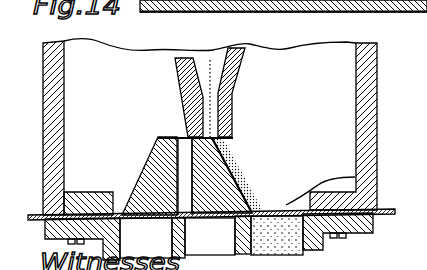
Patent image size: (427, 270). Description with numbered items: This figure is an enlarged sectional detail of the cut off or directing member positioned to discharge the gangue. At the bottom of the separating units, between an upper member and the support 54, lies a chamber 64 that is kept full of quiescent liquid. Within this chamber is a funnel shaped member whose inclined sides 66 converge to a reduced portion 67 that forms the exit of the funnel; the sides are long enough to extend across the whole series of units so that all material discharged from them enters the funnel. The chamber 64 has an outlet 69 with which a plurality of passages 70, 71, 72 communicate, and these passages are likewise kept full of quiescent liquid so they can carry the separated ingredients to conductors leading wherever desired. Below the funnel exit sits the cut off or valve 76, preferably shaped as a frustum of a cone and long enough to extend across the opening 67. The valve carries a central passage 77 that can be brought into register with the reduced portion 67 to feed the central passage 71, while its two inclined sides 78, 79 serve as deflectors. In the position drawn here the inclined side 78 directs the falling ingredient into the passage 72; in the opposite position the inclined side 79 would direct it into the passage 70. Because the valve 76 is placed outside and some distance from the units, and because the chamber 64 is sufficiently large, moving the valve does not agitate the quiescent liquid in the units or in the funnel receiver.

The support 54 is at (386, 214).
The chamber 64 is at (377, 140).
The inclined sides 66 is at (187, 58).
The reduced portion 67 is at (216, 118).
The outlet 69 is at (355, 177).
The passage 70 is at (146, 239).
The central passage 71 is at (210, 239).
The passage 72 is at (296, 245).
The cut off or valve 76 is at (207, 180).
The central passage 77 is at (185, 136).
The inclined side 78 is at (254, 175).
The inclined side 79 is at (150, 170).